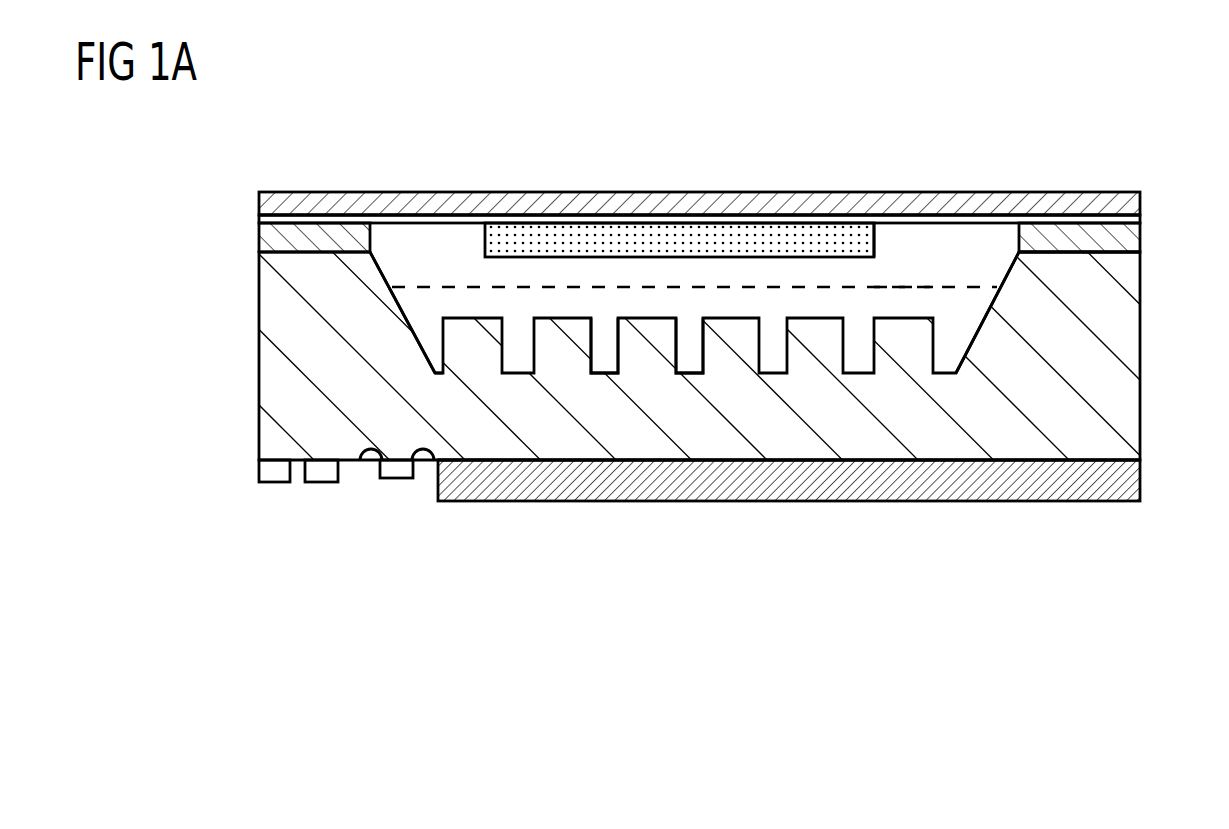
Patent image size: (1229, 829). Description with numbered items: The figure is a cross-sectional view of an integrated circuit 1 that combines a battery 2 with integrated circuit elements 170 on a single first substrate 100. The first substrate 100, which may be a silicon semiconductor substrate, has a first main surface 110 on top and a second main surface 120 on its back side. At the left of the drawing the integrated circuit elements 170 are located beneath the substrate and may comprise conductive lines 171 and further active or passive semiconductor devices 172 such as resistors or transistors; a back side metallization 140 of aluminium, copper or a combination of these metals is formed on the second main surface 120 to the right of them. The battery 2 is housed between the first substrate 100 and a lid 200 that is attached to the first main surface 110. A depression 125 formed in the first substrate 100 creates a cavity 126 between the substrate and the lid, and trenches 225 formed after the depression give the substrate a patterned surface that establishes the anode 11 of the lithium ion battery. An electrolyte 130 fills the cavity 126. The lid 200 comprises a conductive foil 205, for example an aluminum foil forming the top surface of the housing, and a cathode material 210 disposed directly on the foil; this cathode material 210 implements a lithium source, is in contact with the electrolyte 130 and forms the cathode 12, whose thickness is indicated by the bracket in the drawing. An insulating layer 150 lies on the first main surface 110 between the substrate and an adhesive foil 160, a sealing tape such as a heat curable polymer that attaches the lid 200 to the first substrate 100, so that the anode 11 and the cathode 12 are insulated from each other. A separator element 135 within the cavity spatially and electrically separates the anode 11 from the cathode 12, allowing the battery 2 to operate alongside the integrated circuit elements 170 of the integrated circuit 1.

The integrated circuit 1 is at (272, 631).
The battery 2 is at (438, 564).
The anode 11 is at (355, 287).
The cathode 12 is at (886, 223).
The first substrate 100 is at (1125, 348).
The first main surface 110 is at (1118, 253).
The second main surface 120 is at (1112, 455).
The depression 125 is at (972, 307).
The cavity 126 is at (432, 232).
The electrolyte 130 is at (605, 340).
The separator element 135 is at (897, 290).
The back side metallization 140 is at (1127, 481).
The insulating layer 150 is at (1128, 237).
The adhesive foil 160 is at (1128, 221).
The integrated circuit elements 170 is at (346, 534).
The conductive lines 171 is at (275, 483).
The semiconductor devices 172 is at (398, 511).
The lid 200 is at (1128, 205).
The conductive foil 205 is at (316, 205).
The cathode material 210 is at (607, 232).
The trenches 225 is at (690, 360).